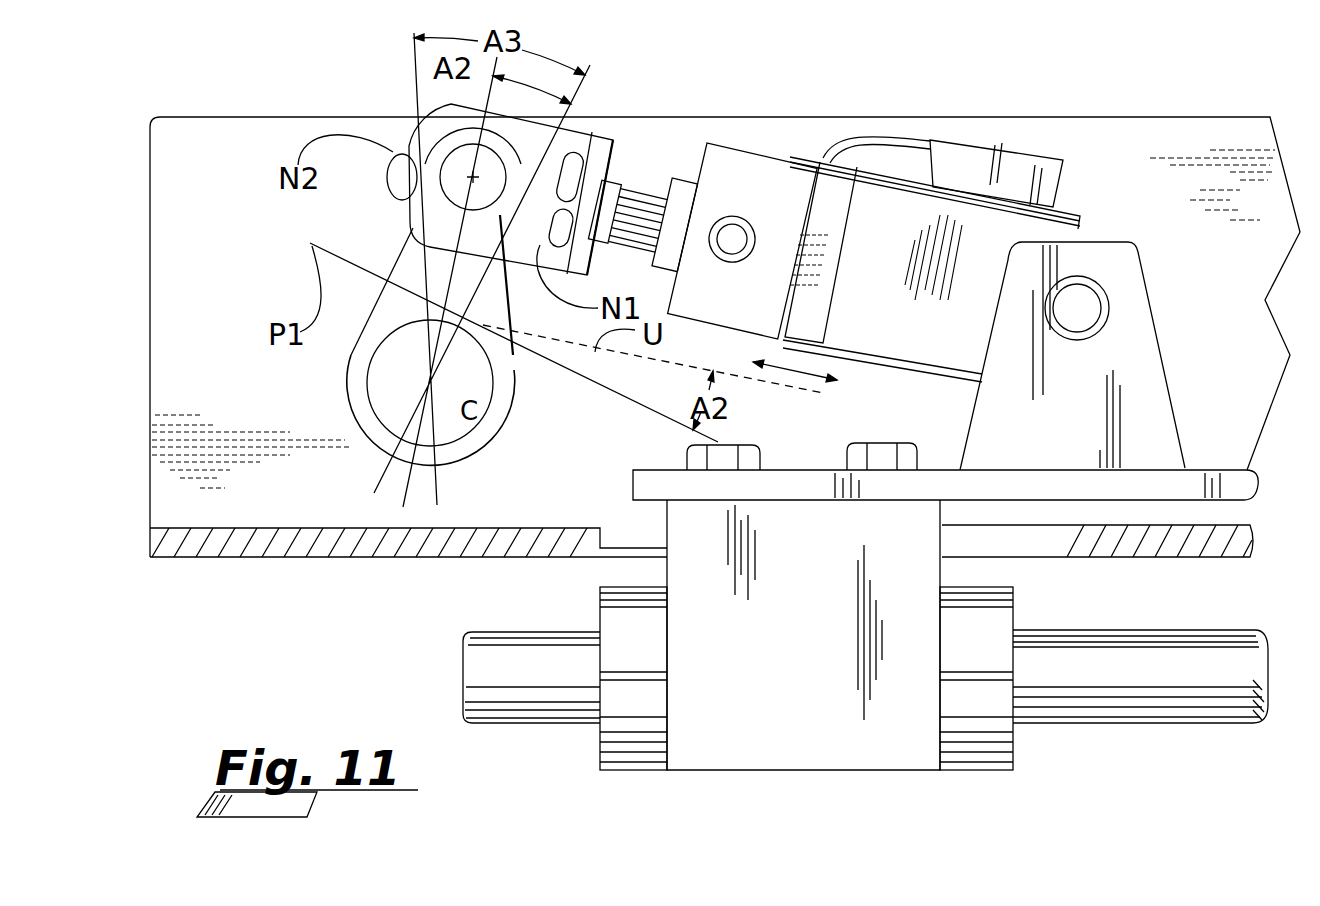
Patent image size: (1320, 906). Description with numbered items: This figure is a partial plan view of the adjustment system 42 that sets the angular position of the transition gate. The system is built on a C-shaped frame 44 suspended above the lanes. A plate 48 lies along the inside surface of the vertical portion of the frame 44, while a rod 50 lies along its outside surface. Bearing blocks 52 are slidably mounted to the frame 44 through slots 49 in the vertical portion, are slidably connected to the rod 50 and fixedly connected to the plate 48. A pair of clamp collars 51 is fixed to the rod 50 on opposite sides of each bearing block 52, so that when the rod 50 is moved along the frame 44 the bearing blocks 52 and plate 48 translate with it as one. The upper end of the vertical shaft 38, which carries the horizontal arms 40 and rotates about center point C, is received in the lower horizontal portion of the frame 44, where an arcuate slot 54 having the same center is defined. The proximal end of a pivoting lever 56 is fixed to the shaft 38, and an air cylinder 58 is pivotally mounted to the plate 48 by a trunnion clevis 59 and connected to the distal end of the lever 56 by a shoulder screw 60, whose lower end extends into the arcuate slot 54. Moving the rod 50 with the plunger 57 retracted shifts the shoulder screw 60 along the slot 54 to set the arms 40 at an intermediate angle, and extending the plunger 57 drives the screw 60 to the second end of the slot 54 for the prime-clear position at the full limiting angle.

The vertical shaft 38 is at (412, 397).
The horizontal arms 40 is at (568, 407).
The adjustment system 42 is at (996, 88).
The C-shaped frame 44 is at (222, 345).
The plate 48 is at (927, 487).
The slots 49 is at (1030, 542).
The rod 50 is at (503, 660).
The clamp collars 51 is at (654, 652).
The bearing blocks 52 is at (833, 699).
The arcuate slot 54 is at (388, 180).
The pivoting lever 56 is at (492, 292).
The plunger 57 is at (640, 183).
The air cylinder 58 is at (900, 232).
The trunnion clevis 59 is at (1050, 445).
The shoulder screw 60 is at (462, 150).